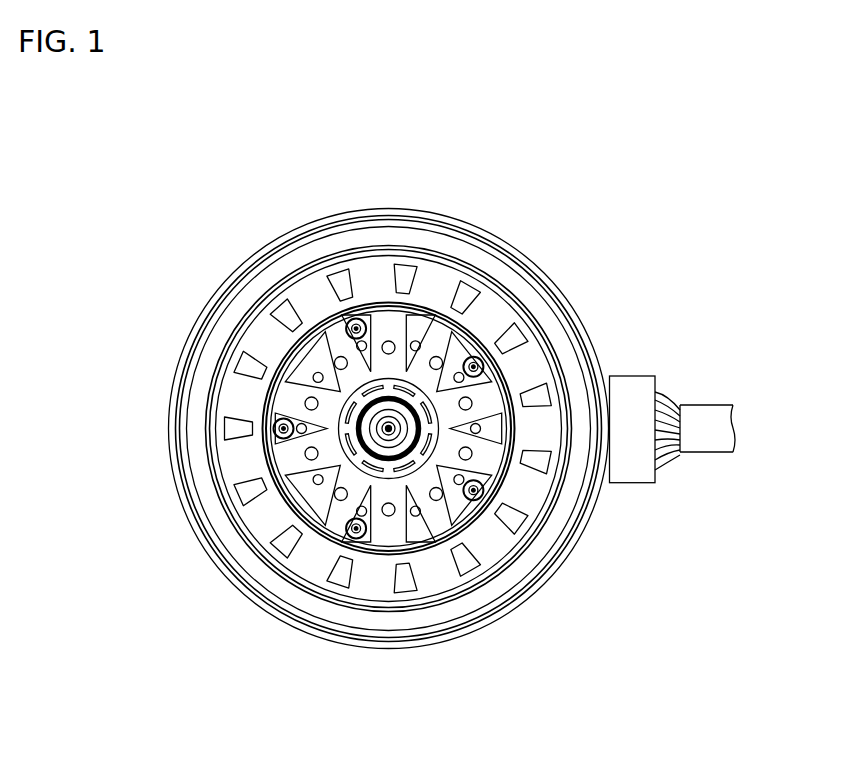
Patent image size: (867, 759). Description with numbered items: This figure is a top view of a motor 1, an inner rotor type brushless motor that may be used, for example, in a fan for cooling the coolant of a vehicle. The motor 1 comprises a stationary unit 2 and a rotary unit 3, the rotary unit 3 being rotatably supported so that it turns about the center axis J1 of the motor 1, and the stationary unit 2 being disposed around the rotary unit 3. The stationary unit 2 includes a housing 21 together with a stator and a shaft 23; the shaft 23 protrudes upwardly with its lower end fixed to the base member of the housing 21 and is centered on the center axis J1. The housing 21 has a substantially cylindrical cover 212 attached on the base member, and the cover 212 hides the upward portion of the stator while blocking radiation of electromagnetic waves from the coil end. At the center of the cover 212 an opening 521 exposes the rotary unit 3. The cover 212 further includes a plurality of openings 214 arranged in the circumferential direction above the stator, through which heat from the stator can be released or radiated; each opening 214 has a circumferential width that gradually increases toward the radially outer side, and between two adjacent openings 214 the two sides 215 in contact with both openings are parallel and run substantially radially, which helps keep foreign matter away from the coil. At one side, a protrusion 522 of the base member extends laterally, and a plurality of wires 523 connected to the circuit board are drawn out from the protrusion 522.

The motor 1 is at (206, 181).
The stationary unit 2 is at (294, 201).
The housing 21 is at (659, 290).
The cover 212 is at (566, 342).
The openings 214 is at (350, 578).
The sides 215 is at (347, 577).
The rotary unit 3 is at (497, 368).
The opening 521 is at (450, 330).
The shaft 23 is at (388, 428).
The protrusion 522 is at (633, 483).
The wires 523 is at (670, 470).
The center axis J1 is at (497, 525).